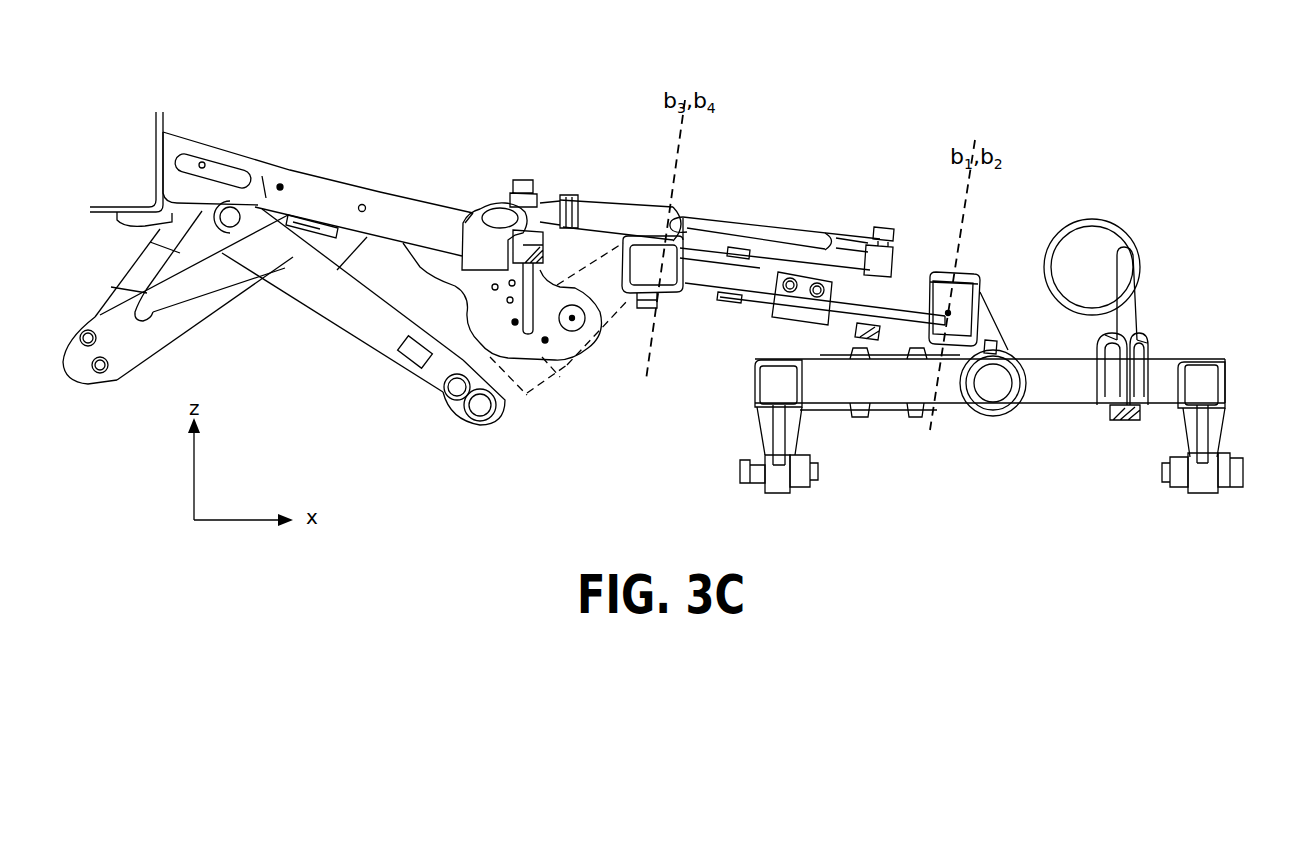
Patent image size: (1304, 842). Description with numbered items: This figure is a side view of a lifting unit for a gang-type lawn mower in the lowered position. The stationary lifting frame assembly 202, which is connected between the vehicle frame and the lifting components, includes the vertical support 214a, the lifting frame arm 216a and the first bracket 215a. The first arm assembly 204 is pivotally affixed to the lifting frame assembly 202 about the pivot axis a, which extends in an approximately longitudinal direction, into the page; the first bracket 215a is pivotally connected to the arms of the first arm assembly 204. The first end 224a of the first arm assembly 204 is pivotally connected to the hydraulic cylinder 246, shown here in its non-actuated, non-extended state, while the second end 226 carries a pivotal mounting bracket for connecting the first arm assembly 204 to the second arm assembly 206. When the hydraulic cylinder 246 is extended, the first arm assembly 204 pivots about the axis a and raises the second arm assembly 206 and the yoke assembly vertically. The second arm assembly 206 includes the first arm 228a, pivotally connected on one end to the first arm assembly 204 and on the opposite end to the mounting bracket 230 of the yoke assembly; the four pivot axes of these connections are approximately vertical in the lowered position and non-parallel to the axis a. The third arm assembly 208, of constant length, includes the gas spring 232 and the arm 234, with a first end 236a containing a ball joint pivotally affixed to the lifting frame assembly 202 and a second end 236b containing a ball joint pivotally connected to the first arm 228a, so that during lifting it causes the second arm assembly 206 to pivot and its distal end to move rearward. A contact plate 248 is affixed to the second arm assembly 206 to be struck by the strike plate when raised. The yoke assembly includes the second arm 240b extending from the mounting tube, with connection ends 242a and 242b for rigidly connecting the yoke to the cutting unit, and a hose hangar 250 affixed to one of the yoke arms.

The lifting frame assembly 202 is at (254, 142).
The lifting frame arm 216a is at (388, 205).
The first end 236a is at (495, 203).
The gas spring 232 is at (637, 207).
The first arm 228a is at (718, 280).
The third arm assembly 208 is at (748, 205).
The arm 234 is at (808, 240).
The second end 236b is at (886, 245).
The mounting bracket 230 is at (968, 287).
The hose hangar 250 is at (1092, 219).
The first bracket 215a is at (485, 312).
The vertical support 214a is at (222, 300).
The hydraulic cylinder 246 is at (350, 308).
The first end 224a is at (500, 415).
The first arm assembly 204 is at (574, 376).
The pivot axis a is at (575, 319).
The second arm assembly 206 is at (752, 312).
The second end 226 is at (673, 300).
The contact plate 248 is at (808, 316).
The second arm 240b is at (895, 387).
The connection end 242b is at (1087, 395).
The connection end 242a is at (1203, 462).